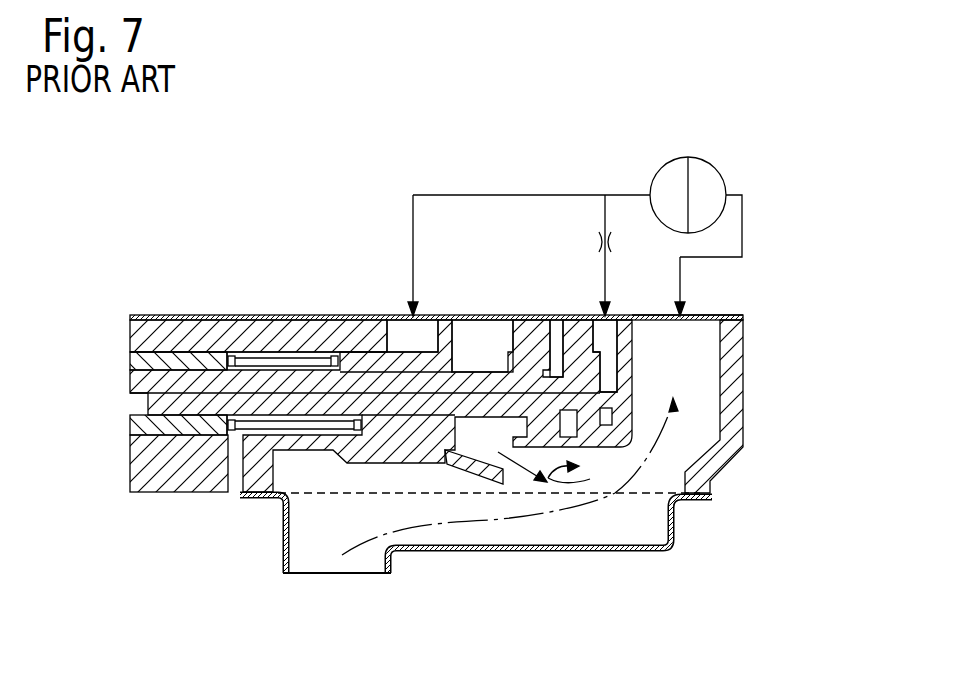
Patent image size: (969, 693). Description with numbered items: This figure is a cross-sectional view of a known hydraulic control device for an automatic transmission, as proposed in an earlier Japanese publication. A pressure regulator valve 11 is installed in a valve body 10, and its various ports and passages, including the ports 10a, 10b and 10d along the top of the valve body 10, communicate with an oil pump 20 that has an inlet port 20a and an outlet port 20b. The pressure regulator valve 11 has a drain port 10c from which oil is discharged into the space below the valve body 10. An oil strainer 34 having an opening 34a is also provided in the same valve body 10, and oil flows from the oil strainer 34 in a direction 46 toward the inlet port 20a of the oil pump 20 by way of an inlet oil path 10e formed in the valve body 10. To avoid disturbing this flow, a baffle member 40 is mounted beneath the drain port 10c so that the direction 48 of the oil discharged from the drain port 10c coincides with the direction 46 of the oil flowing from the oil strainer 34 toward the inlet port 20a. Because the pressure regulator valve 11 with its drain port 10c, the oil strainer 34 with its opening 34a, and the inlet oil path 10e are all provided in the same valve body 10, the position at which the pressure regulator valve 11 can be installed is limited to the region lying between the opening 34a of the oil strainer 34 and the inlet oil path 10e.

The valve body 10 is at (130, 460).
The inlet passage 10a is at (617, 318).
The drain passage 10b is at (558, 316).
The drain port 10c is at (466, 316).
The outlet passage 10d is at (395, 315).
The inlet oil path 10e is at (745, 385).
The pressure regulator valve 11 is at (329, 222).
The oil pump 20 is at (706, 148).
The inlet port 20a is at (726, 178).
The oil pump outlet 20b is at (669, 160).
The oil strainer 34 is at (608, 552).
The opening 34a is at (323, 567).
The baffle member 40 is at (478, 470).
The direction of oil flow from oil strainer 46 is at (557, 505).
The direction of discharged oil flow 48 is at (560, 468).